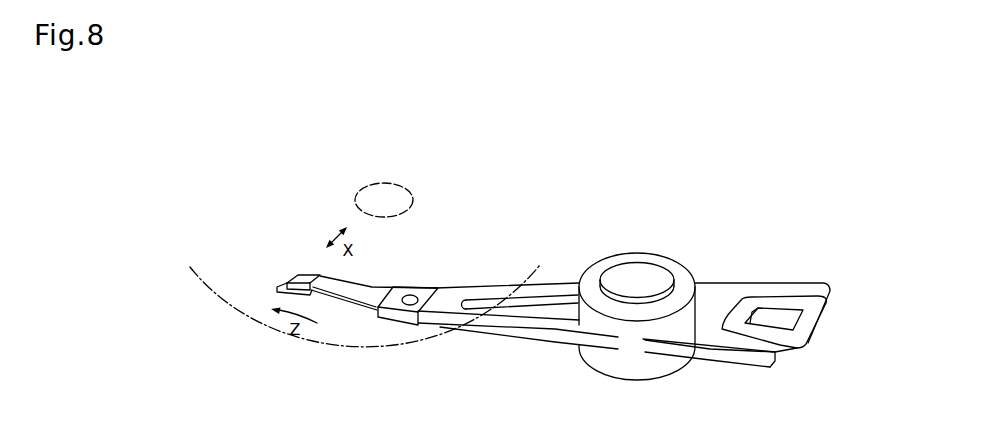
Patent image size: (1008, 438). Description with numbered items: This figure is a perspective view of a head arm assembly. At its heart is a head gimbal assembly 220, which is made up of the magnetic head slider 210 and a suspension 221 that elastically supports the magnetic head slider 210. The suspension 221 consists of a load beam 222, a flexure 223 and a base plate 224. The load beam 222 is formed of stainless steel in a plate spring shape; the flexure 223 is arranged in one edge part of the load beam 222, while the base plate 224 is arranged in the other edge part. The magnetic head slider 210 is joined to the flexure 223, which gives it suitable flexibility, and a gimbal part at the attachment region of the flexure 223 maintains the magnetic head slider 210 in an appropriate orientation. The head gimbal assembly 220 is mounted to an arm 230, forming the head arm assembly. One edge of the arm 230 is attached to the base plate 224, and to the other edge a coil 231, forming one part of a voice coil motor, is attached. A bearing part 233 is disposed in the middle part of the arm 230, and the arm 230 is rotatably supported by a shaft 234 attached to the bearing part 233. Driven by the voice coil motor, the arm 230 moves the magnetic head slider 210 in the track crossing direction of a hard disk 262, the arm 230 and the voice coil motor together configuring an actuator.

The magnetic head slider 210 is at (303, 280).
The head gimbal assembly 220 is at (371, 327).
The suspension 221 is at (371, 250).
The load beam 222 is at (389, 287).
The flexure 223 is at (287, 281).
The base plate 224 is at (434, 288).
The arm 230 is at (490, 327).
The coil 231 is at (818, 337).
The bearing part 233 is at (595, 268).
The shaft 234 is at (646, 271).
The hard disk 262 is at (313, 343).